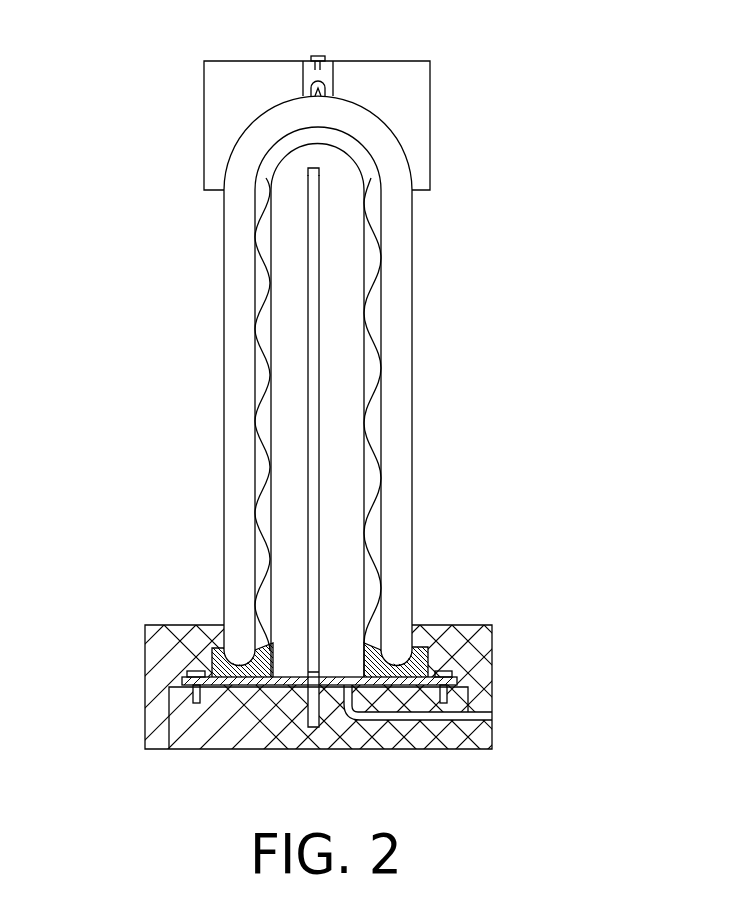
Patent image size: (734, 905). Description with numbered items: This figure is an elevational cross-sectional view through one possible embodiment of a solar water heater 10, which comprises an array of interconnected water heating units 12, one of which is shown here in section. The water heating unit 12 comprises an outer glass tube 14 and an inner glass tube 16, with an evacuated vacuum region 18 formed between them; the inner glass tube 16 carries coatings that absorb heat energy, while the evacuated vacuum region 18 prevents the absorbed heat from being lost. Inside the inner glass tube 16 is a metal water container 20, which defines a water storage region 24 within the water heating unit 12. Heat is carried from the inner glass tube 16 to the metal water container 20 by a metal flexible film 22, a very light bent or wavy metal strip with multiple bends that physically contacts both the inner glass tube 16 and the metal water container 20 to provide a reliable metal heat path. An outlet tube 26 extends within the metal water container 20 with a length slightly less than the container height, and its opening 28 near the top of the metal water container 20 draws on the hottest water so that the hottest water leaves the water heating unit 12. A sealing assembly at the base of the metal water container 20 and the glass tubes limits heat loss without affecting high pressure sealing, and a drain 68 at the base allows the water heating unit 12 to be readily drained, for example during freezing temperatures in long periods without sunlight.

The solar water heater 10 is at (618, 98).
The water heating unit 12 is at (487, 255).
The outer glass tube 14 is at (223, 255).
The inner glass tube 16 is at (255, 303).
The evacuated vacuum region 18 is at (237, 378).
The metal water container 20 is at (380, 362).
The metal flexible film 22 is at (262, 477).
The water storage region 24 is at (340, 442).
The outlet tube 26 is at (307, 205).
The opening 28 is at (308, 167).
The drain 68 is at (458, 715).